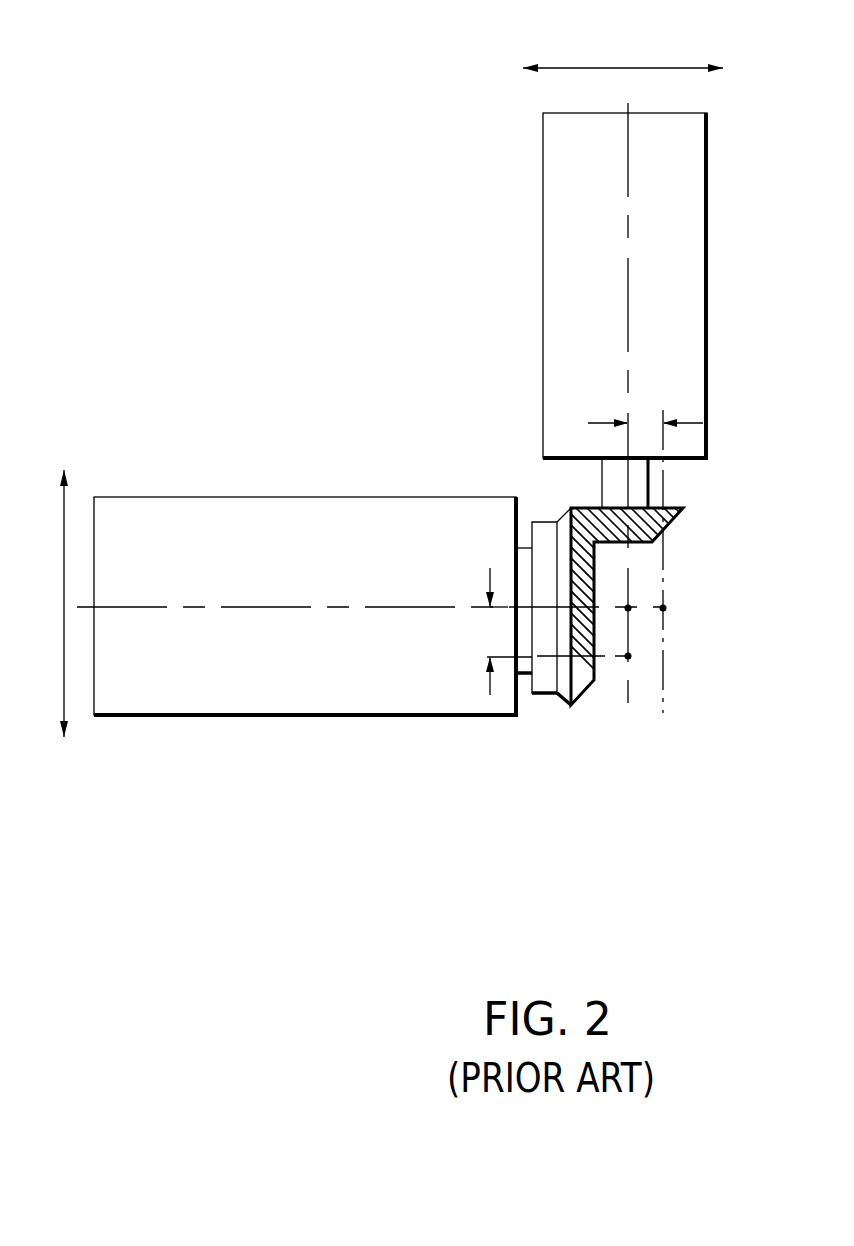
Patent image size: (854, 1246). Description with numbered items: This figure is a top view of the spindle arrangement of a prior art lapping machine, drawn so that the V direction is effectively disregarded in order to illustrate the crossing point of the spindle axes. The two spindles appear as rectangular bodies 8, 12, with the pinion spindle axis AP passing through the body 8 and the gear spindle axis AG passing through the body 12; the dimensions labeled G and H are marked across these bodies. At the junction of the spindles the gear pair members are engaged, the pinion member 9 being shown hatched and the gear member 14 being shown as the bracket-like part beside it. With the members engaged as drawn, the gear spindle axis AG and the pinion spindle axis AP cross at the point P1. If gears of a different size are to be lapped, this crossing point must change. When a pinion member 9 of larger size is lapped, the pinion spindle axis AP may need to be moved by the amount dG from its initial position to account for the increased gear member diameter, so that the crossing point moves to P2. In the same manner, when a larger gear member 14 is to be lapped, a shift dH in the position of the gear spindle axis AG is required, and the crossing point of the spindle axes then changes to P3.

The print head (ink jet cartridge) 8 is at (680, 193).
The pinion member 9 is at (683, 508).
The drum / print medium support 12 is at (160, 512).
The gear member 14 is at (570, 705).
The print head width dimension G is at (641, 68).
The shift of pinion spindle axis dG is at (645, 538).
The drum height dimension H is at (64, 575).
The shift of gear spindle axis dH is at (529, 631).
The pinion spindle axis AP is at (628, 300).
The gear spindle axis AG is at (255, 607).
The crossing point P1 is at (629, 608).
The shifted crossing point P2 is at (663, 608).
The shifted crossing point P3 is at (628, 656).